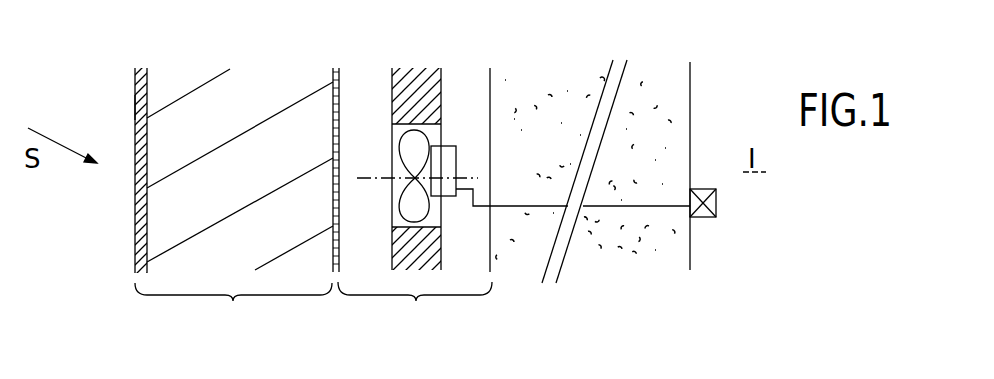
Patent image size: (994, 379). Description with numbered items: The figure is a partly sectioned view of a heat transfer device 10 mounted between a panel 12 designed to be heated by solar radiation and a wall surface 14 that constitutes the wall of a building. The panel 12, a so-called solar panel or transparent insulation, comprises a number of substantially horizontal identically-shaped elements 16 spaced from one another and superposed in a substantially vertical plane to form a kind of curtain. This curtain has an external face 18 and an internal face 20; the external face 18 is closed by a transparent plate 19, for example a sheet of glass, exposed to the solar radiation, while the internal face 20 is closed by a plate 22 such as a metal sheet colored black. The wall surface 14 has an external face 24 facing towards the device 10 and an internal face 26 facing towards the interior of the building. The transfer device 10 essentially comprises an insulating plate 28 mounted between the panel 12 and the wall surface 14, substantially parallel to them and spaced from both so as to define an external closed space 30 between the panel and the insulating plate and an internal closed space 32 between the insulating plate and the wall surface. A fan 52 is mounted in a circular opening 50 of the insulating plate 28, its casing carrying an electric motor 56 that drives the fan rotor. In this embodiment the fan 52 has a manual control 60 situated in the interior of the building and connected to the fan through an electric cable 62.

The heat transfer device 10 is at (415, 309).
The panel 12 is at (233, 311).
The wall surface 14 is at (587, 272).
The identically-shaped elements 16 is at (245, 208).
The external face 18 is at (147, 92).
The transparent plate 19 is at (135, 107).
The internal face 20 is at (333, 107).
The plate 22 is at (339, 105).
The external face 24 is at (490, 88).
The internal face 26 is at (690, 103).
The insulating plate 28 is at (420, 55).
The external closed space 30 is at (379, 126).
The internal closed space 32 is at (477, 126).
The circular opening 50 is at (440, 218).
The fan 52 is at (393, 196).
The electric motor 56 is at (448, 163).
The manual control 60 is at (717, 206).
The electric cable 62 is at (618, 207).